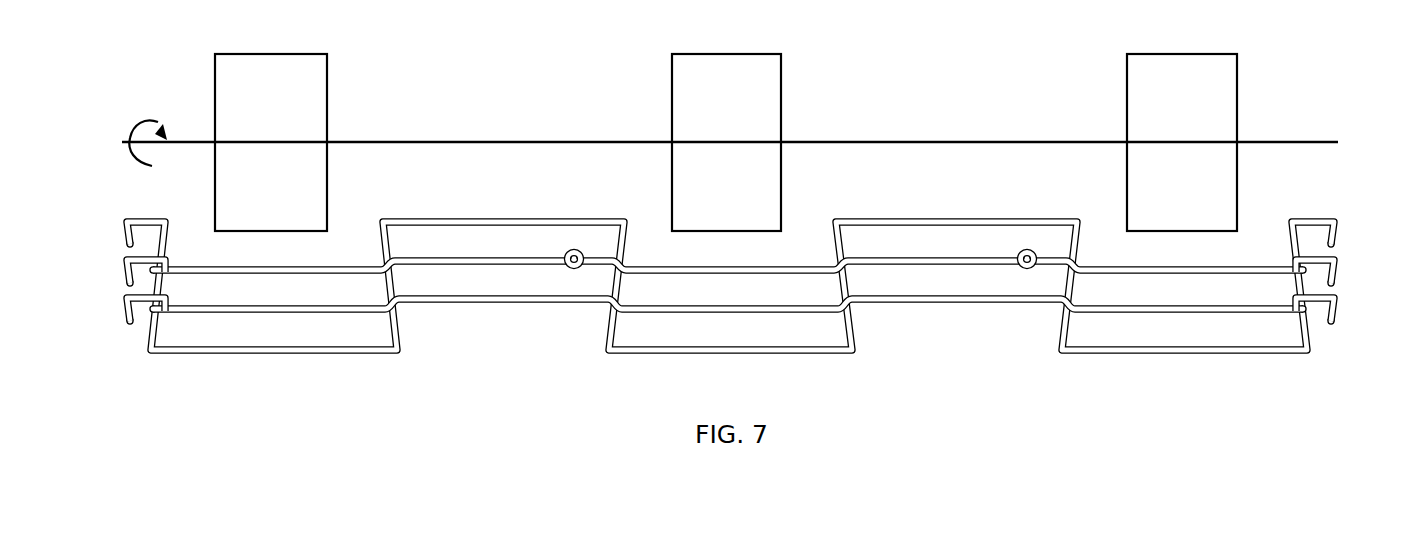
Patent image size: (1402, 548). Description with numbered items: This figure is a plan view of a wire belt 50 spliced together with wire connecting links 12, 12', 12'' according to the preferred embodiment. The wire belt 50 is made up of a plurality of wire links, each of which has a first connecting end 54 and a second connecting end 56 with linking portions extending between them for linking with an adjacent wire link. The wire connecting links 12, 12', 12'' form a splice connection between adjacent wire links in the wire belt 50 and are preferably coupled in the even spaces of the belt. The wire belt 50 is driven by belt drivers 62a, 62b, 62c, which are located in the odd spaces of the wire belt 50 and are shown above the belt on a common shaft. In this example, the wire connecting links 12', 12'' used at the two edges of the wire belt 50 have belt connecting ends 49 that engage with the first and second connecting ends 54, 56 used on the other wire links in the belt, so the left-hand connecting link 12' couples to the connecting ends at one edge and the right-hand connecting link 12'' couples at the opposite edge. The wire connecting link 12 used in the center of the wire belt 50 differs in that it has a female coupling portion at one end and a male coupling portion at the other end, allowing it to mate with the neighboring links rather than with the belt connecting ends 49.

The wire connecting link 12 is at (730, 286).
The wire connecting link 12' is at (273, 286).
The wire connecting link 12'' is at (1190, 286).
The belt connecting end 49 is at (122, 273).
The wire belt 50 is at (962, 388).
The first connecting end 54 is at (121, 311).
The second connecting end 56 is at (1338, 312).
The belt driver 62a is at (327, 109).
The belt driver 62b is at (781, 121).
The belt driver 62c is at (1237, 115).